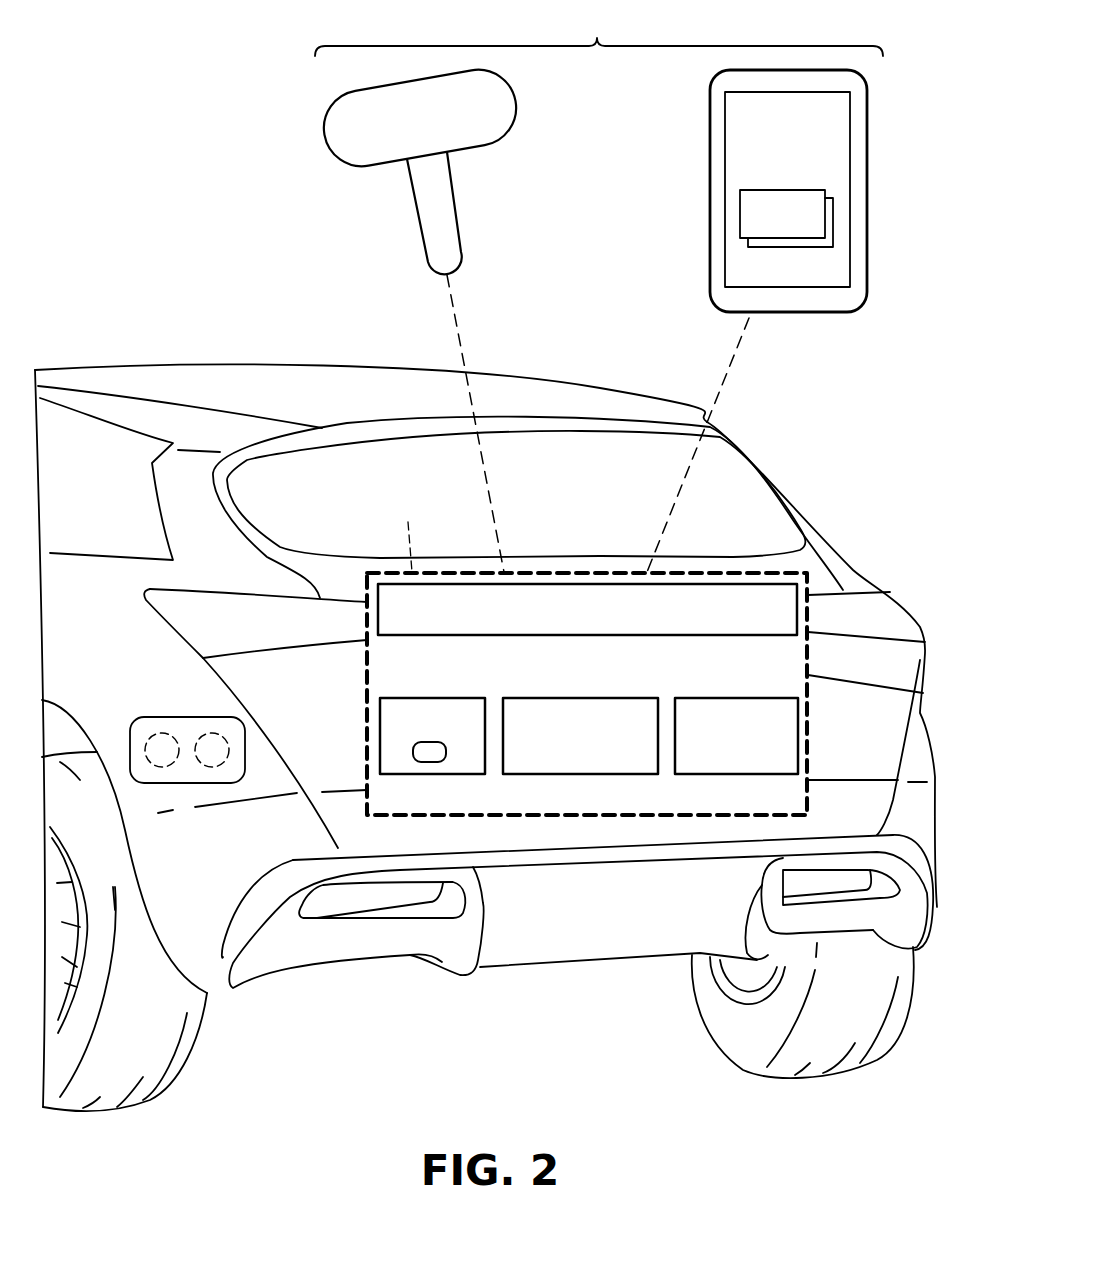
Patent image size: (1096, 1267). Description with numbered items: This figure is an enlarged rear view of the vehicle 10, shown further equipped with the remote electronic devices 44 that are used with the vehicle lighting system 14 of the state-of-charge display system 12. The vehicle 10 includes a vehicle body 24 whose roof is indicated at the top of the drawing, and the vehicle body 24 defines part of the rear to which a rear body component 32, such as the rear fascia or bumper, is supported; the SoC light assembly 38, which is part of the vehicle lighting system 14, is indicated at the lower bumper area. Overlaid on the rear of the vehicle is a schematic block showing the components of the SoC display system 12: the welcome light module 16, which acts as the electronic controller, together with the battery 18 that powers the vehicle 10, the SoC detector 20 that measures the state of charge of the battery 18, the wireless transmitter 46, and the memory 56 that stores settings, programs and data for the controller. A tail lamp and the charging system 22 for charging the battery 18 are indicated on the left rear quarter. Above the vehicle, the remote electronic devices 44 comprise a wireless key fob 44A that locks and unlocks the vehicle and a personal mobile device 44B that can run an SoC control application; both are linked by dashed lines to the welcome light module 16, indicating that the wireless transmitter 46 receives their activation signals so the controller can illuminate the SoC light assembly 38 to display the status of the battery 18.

The vehicle 10 is at (180, 360).
The state-of-charge display system 12 is at (901, 470).
The vehicle lighting system 14 is at (645, 822).
The welcome light module 16 is at (630, 637).
The battery 18 is at (440, 697).
The SoC detector 20 is at (430, 763).
The charging system 22 is at (167, 713).
The vehicle body 24 is at (343, 364).
The rear body component 32 is at (530, 938).
The SoC light assembly 38 is at (602, 977).
The remote electronic devices 44 is at (599, 291).
The wireless key fob 44A is at (506, 136).
The personal mobile device 44B is at (710, 212).
The wireless transmitter 46 is at (573, 697).
The memory 56 is at (733, 697).